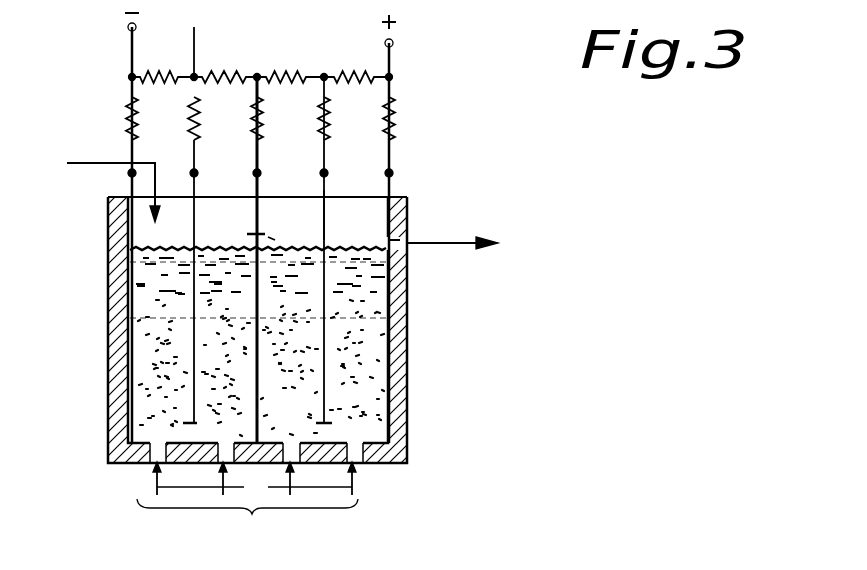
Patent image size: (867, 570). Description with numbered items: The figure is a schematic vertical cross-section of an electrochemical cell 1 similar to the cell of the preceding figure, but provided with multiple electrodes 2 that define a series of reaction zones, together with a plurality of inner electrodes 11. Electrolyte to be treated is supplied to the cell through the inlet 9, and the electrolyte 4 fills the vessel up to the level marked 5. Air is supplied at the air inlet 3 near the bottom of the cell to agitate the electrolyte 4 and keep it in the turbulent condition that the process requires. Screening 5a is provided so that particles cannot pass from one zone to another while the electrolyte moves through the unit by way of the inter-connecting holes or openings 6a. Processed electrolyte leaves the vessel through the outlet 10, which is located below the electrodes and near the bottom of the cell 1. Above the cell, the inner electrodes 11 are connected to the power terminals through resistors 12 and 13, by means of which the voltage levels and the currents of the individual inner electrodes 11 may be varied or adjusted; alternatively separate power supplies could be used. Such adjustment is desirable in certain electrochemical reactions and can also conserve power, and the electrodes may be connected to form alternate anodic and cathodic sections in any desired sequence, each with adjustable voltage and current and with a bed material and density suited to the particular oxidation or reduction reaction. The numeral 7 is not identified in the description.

The electrochemical cell 1 is at (110, 285).
The electrodes 2 is at (125, 186).
The air inlet 3 is at (247, 502).
The electrolyte 4 is at (140, 368).
The electrolyte level 5 is at (366, 252).
The screening 5a is at (247, 235).
The inter-connecting holes or openings 6a is at (268, 238).
The liquid layer boundary 7 is at (128, 247).
The inlet 9 is at (96, 162).
The outlet 10 is at (407, 255).
The inner electrodes 11 is at (193, 191).
The resistors 12 is at (234, 60).
The resistor 13 is at (264, 118).